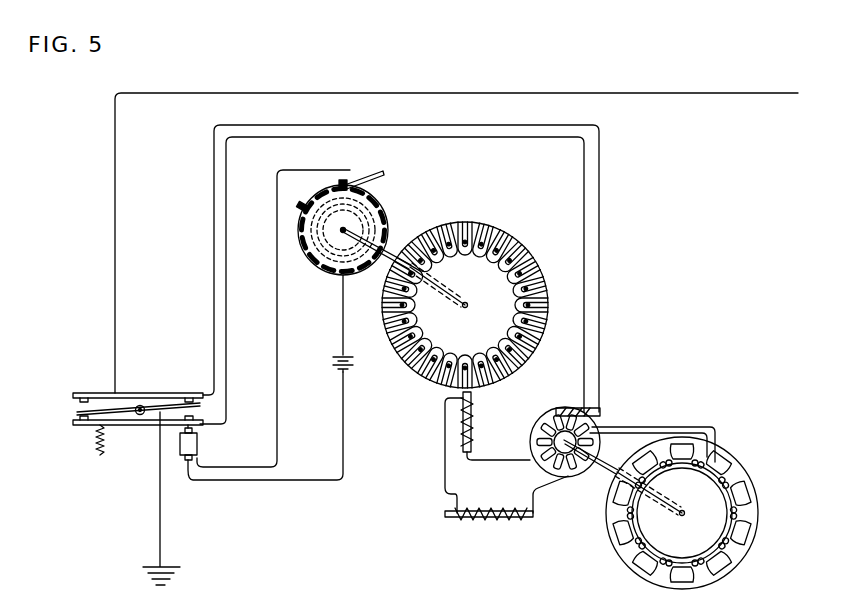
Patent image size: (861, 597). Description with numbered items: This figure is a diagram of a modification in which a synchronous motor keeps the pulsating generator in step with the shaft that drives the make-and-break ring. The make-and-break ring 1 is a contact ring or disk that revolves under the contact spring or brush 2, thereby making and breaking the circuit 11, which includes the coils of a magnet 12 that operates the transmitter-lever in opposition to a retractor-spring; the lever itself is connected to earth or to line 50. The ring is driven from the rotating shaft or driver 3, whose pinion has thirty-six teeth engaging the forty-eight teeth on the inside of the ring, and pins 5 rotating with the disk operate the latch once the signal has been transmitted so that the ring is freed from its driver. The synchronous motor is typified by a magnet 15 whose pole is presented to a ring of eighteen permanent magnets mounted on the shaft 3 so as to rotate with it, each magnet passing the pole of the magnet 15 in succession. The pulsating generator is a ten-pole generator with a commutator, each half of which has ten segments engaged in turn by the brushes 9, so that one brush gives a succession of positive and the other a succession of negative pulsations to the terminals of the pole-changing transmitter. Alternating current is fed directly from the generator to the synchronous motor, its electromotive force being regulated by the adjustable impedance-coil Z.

The line 50 is at (456, 232).
The make-and-break ring 1 is at (376, 217).
The contact spring or brush 2 is at (384, 175).
The rotating shaft or driver 3 is at (343, 230).
The pins 5 is at (338, 185).
The commutator-brushes 9 is at (575, 409).
The circuit 11 is at (344, 418).
The magnet 12 is at (199, 443).
The magnet 15 is at (472, 404).
The adjustable impedance-coil Z is at (506, 512).